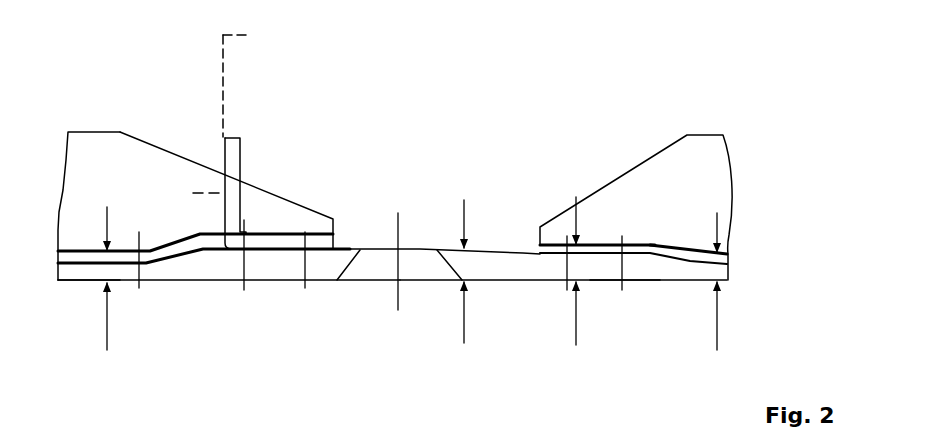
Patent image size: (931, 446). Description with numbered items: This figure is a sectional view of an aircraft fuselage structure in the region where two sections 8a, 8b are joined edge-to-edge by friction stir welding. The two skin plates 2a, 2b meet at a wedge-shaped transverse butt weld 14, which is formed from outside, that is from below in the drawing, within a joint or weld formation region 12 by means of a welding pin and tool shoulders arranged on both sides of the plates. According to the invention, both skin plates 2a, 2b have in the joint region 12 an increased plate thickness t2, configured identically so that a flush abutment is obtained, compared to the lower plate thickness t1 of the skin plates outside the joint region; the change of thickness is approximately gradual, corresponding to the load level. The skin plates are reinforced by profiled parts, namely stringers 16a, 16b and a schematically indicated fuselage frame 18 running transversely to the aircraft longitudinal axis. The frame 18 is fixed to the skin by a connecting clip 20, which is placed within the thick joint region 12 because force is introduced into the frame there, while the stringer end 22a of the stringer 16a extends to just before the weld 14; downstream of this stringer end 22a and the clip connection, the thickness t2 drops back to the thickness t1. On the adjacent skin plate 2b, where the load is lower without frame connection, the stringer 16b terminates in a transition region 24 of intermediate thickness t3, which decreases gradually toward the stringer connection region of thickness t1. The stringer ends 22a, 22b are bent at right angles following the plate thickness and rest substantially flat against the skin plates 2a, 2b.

The skin plate 2a is at (222, 283).
The skin plate 2b is at (521, 270).
The section 8a is at (83, 288).
The section 8b is at (614, 289).
The joint region 12 is at (371, 293).
The butt weld 14 is at (428, 273).
The stringer 16a is at (95, 165).
The stringer 16b is at (650, 190).
The fuselage frame 18 is at (223, 127).
The connecting clip 20 is at (243, 150).
The stringer end 22a is at (312, 199).
The stringer end 22b is at (562, 204).
The transition region 24 is at (652, 242).
The plate thickness t1 is at (423, 282).
The plate thickness t2 is at (475, 272).
The intermediate thickness t3 is at (587, 271).